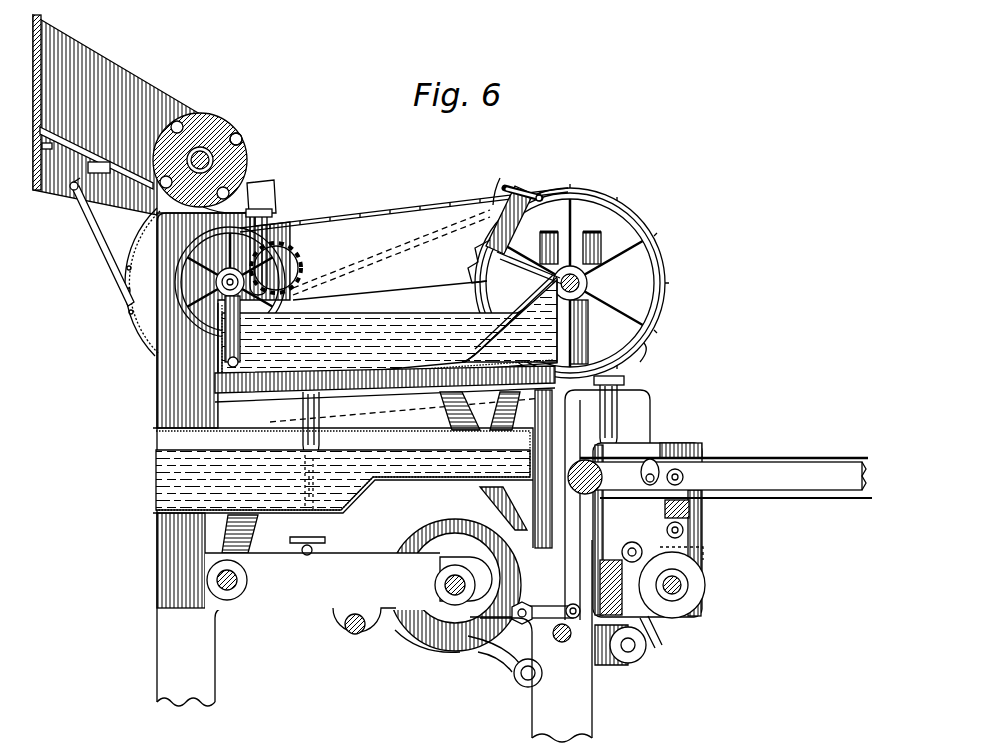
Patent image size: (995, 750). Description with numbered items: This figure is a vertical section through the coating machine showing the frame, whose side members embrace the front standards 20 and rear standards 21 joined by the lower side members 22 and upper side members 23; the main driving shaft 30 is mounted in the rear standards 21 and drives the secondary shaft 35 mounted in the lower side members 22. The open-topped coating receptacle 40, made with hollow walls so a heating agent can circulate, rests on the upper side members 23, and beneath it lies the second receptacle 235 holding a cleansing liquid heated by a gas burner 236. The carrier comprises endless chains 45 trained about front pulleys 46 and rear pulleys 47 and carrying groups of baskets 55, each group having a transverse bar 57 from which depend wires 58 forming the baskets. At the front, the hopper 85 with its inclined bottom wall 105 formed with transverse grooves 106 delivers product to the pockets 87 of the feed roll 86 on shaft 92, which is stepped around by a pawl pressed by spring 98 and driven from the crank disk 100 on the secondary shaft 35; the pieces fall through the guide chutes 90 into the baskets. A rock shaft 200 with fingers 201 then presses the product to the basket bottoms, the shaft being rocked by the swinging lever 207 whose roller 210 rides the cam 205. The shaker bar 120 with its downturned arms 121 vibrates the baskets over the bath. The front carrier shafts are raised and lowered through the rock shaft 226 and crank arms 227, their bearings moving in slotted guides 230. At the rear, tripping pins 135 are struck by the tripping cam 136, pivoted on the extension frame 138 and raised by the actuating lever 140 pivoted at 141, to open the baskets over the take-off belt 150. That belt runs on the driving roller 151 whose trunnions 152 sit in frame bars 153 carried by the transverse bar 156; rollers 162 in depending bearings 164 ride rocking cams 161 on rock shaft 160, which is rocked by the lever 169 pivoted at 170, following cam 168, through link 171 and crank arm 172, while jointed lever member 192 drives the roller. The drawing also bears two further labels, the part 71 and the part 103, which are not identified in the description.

The transverse grooves 106 is at (42, 150).
The inclined bottom wall 105 is at (60, 170).
The hopper 85 is at (133, 95).
The feed roll shaft 92 is at (200, 113).
The feed roll 86 is at (195, 138).
The pockets 87 is at (243, 141).
The guide chutes 90 is at (263, 190).
The group of baskets 55 is at (270, 225).
The endless chains 45 is at (437, 213).
The tripping pins 135 is at (498, 178).
The wires 58 is at (488, 205).
The transverse bar 57 is at (512, 183).
The shaker bar 120 is at (570, 190).
The rear pulleys 47 is at (660, 283).
The front pulleys 46 is at (276, 268).
The downturned arms 121 is at (400, 272).
The coating receptacle 40 is at (512, 315).
The spring 98 is at (203, 290).
The fingers 201 is at (212, 340).
The rock shaft 200 is at (215, 378).
The slotted guides 230 is at (205, 415).
The upper side members 23 is at (368, 394).
The swinging lever 207 is at (405, 394).
The post 71 is at (543, 408).
The tripping cam 136 is at (626, 379).
The frame bars 153 is at (723, 477).
The trunnions 152 is at (683, 497).
The take-off belt 150 is at (775, 448).
The second receptacle 235 is at (403, 490).
The roller 210 is at (520, 520).
The driving roller 151 is at (565, 490).
The crank arms 227 is at (220, 537).
The transverse bar 156 is at (665, 508).
The crank arm 172 is at (630, 545).
The depending bearings 164 is at (693, 517).
The rollers 162 is at (687, 532).
The extension frame 138 is at (703, 540).
The secondary shaft 35 is at (450, 573).
The gas burner 236 is at (300, 546).
The jointed lever member 192 is at (437, 588).
The crank disk 100 is at (482, 570).
The actuating lever 140 is at (532, 608).
The rock shaft 160 is at (680, 590).
The rock shaft 226 is at (217, 585).
The lower side members 22 is at (305, 600).
The cam 205 is at (397, 628).
The rocking cams 161 is at (648, 613).
The link 171 is at (655, 650).
The front standards 20 is at (153, 652).
The eccentric strap 103 is at (425, 640).
The cam 168 is at (480, 642).
The pivot 141 is at (483, 675).
The pivot 170 is at (522, 687).
The main driving shaft 30 is at (560, 644).
The lever 169 is at (603, 663).
The rear standards 21 is at (593, 716).